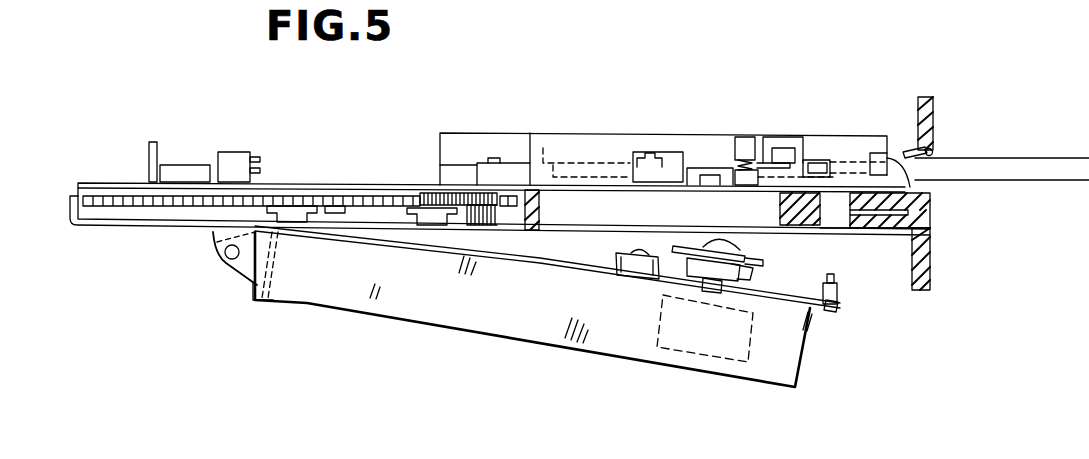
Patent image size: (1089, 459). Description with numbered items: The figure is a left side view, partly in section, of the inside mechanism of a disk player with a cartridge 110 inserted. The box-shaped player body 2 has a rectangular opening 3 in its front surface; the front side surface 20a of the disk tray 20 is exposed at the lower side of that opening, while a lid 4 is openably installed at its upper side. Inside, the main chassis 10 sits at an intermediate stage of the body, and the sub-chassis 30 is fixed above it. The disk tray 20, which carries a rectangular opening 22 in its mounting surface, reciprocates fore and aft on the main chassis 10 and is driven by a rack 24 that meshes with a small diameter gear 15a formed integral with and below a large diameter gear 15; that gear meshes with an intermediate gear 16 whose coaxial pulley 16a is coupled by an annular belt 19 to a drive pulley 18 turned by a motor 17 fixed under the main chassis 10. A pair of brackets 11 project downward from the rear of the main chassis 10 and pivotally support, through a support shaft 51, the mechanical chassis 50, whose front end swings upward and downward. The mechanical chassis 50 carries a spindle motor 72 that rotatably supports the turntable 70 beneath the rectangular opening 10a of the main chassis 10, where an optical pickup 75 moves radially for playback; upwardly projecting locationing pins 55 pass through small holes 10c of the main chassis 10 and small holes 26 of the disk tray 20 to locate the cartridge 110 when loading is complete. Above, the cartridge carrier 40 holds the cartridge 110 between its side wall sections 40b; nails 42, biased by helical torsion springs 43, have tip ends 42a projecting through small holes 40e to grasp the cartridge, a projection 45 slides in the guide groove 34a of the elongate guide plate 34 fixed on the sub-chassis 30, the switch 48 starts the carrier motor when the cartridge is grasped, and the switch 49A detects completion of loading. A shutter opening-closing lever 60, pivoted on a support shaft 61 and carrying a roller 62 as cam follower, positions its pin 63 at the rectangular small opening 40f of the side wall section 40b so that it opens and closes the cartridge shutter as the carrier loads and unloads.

The player body 2 is at (936, 115).
The rectangular opening 3 is at (932, 232).
The lid 4 is at (947, 150).
The main chassis 10 is at (103, 228).
The rectangular opening 10a is at (775, 223).
The small holes 10c is at (843, 236).
The brackets 11 is at (216, 240).
The large diameter gear 15 is at (508, 200).
The small diameter gear 15a is at (520, 225).
The intermediate gear 16 is at (445, 210).
The pulley 16a is at (412, 225).
The motor 17 is at (258, 306).
The drive pulley 18 is at (300, 222).
The annular belt 19 is at (360, 222).
The disk tray 20 is at (108, 183).
The front side surface 20a is at (932, 200).
The rectangular opening 22 is at (772, 215).
The rack 24 is at (168, 207).
The small holes 26 is at (910, 212).
The sub-chassis 30 is at (333, 183).
The elongate guide plate 34 is at (450, 160).
The guide groove 34a is at (712, 168).
The cartridge carrier 40 is at (846, 130).
The side wall sections 40b is at (597, 140).
The small holes 40e is at (862, 150).
The rectangular small opening 40f is at (637, 152).
The nails 42 is at (775, 148).
The tip ends 42a is at (816, 163).
The helical torsion springs 43 is at (762, 137).
The projection 45 is at (745, 160).
The switch 48 is at (810, 160).
The switch 49A is at (240, 152).
The mechanical chassis 50 is at (477, 342).
The support shaft 51 is at (226, 260).
The locationing pins 55 is at (835, 312).
The shutter opening-closing lever 60 is at (516, 160).
The support shaft 61 is at (492, 158).
The roller 62 is at (557, 148).
The pin 63 is at (648, 153).
The turntable 70 is at (746, 292).
The spindle motor 72 is at (710, 362).
The optical pickup 75 is at (637, 278).
The cartridge 110 is at (1030, 157).